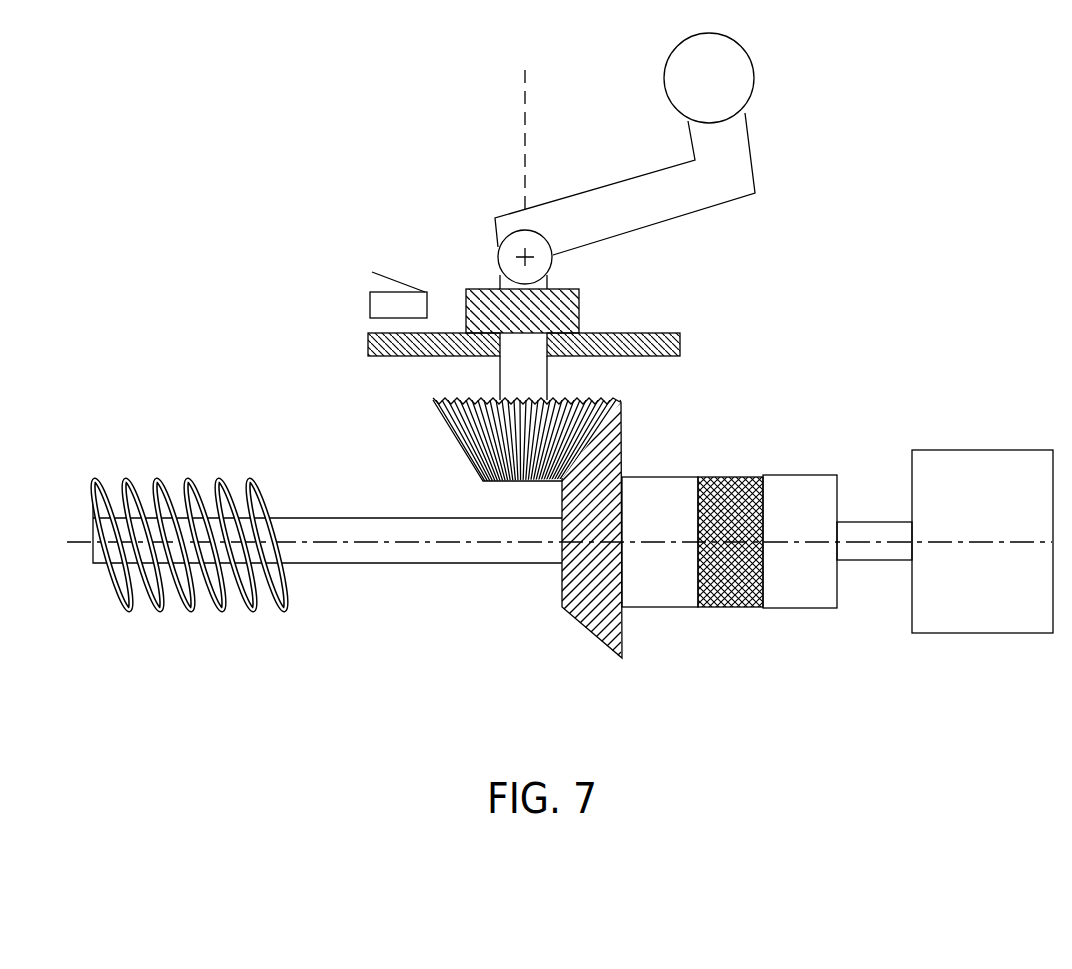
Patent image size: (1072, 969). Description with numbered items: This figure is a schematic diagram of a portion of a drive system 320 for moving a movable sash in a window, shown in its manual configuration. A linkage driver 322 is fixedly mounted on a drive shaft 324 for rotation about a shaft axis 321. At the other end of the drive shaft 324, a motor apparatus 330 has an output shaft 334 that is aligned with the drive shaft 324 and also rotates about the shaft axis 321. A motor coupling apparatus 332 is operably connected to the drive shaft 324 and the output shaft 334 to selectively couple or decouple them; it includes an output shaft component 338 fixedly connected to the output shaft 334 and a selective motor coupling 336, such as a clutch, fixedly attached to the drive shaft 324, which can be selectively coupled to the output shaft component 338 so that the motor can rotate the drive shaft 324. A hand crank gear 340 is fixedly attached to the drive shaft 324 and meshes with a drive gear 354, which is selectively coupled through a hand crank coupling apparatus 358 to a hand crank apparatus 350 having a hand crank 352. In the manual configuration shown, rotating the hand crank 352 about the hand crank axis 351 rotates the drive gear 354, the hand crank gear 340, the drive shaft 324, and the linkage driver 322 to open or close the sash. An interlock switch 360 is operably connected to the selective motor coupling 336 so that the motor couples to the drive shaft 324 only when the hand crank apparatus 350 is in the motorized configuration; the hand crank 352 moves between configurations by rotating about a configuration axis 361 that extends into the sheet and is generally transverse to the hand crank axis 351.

The drive system 320 is at (935, 155).
The shaft axis 321 is at (80, 545).
The linkage driver 322 is at (183, 628).
The drive shaft 324 is at (363, 573).
The motor apparatus 330 is at (945, 582).
The motor coupling apparatus 332 is at (731, 550).
The output shaft 334 is at (874, 579).
The selective motor coupling 336 is at (732, 475).
The output shaft component 338 is at (800, 475).
The hand crank gear 340 is at (590, 635).
The hand crank apparatus 350 is at (611, 161).
The hand crank axis 351 is at (527, 147).
The hand crank 352 is at (753, 157).
The drive gear 354 is at (457, 438).
The hand crank coupling apparatus 358 is at (580, 313).
The interlock switch 360 is at (370, 300).
The configuration axis 361 is at (500, 266).